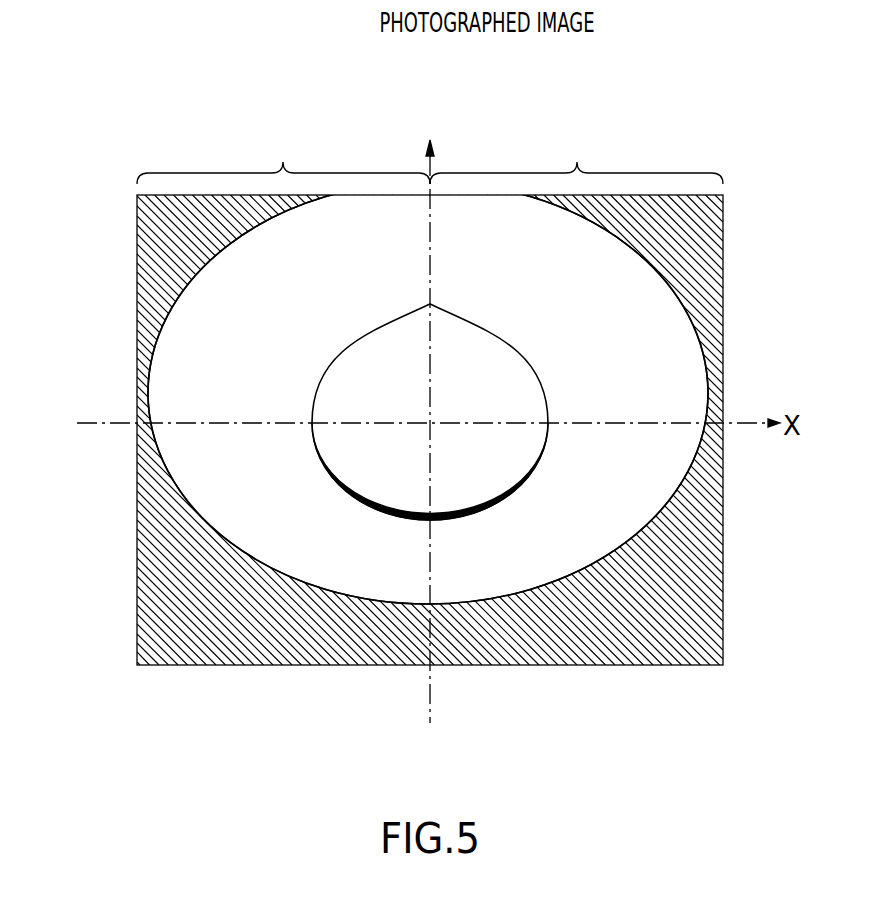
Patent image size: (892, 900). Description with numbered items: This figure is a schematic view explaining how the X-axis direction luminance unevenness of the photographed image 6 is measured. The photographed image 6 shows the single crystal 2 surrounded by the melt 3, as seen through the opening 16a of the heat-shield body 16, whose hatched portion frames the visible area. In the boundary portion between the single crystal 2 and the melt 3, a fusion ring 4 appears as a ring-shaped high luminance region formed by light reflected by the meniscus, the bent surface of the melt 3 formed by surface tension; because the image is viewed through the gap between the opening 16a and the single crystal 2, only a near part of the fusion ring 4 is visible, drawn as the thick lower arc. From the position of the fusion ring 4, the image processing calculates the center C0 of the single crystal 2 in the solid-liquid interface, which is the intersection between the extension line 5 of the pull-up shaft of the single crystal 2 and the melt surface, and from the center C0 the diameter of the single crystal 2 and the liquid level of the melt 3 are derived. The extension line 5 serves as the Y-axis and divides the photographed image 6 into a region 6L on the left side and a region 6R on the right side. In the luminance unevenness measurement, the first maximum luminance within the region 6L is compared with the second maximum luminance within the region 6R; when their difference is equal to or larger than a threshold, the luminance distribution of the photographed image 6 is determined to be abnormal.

The photographed image 6 is at (478, 64).
The region on the left side 6L is at (283, 130).
The region on the right side 6R is at (576, 129).
The heat-shield body 16 is at (152, 281).
The opening of the heat-shield body 16a is at (203, 394).
The melt 3 is at (667, 365).
The single crystal 2 is at (497, 370).
The fusion ring 4 is at (370, 512).
The extension line of the pull-up shaft 5 is at (430, 263).
The center of the single crystal C0 is at (424, 417).